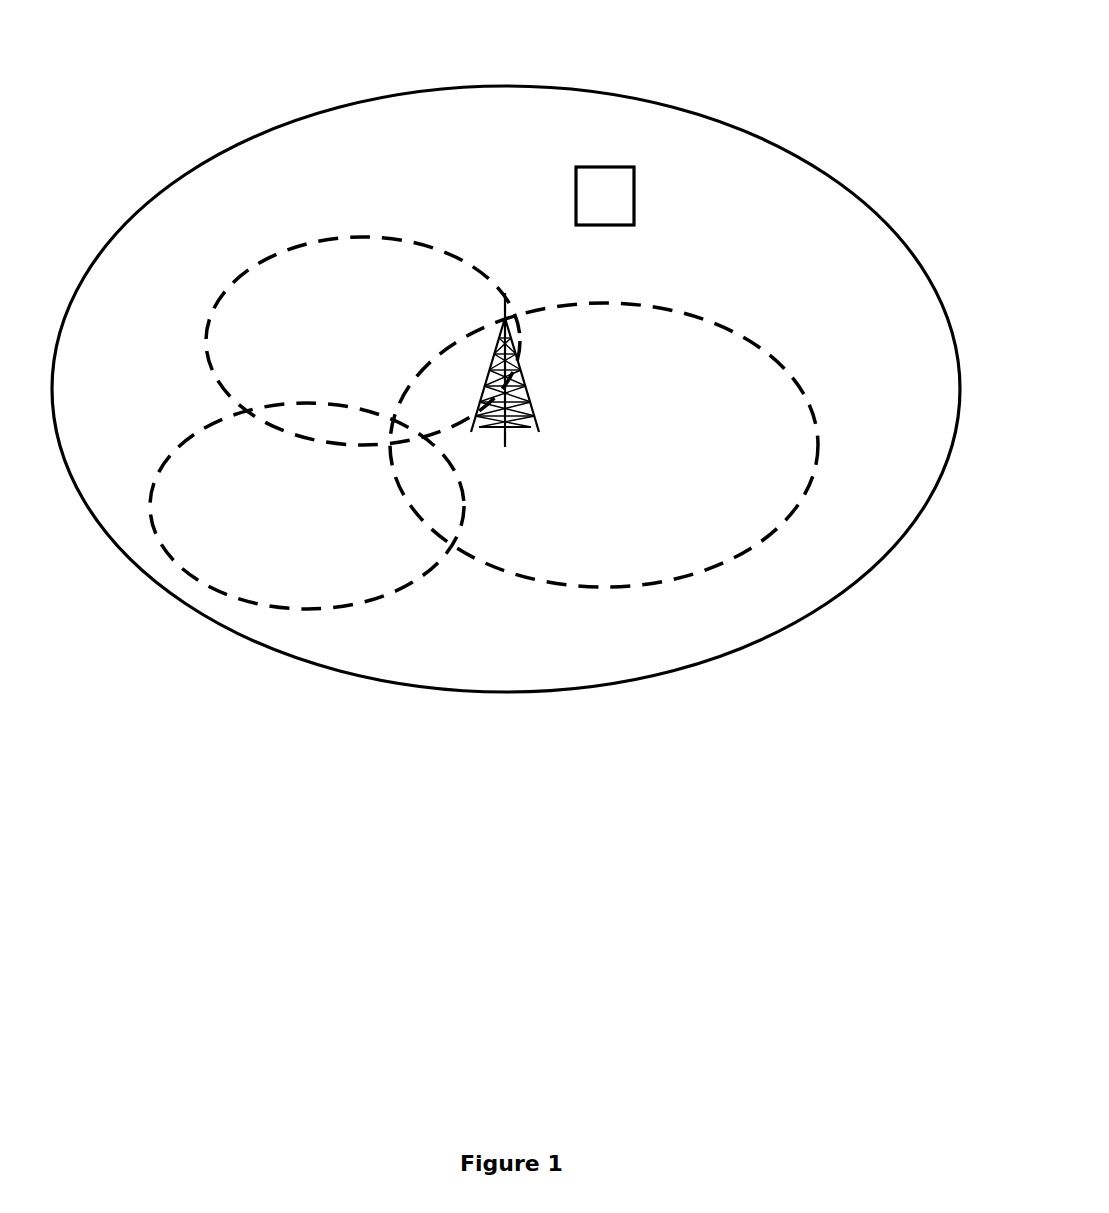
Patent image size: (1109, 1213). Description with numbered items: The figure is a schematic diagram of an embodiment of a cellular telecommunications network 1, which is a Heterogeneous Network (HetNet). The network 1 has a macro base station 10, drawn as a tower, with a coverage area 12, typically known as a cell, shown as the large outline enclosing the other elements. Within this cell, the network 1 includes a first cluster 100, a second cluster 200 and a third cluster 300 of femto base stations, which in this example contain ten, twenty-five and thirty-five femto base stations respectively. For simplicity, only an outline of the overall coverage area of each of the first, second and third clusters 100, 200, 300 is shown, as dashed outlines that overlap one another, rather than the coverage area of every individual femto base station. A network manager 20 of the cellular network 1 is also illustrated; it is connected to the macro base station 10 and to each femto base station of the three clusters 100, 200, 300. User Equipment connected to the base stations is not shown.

The cellular telecommunications network 1 is at (772, 44).
The macro base station 10 is at (543, 396).
The coverage area 12 is at (300, 120).
The network manager 20 is at (604, 167).
The first cluster 100 is at (192, 578).
The second cluster 200 is at (222, 300).
The third cluster 300 is at (753, 547).